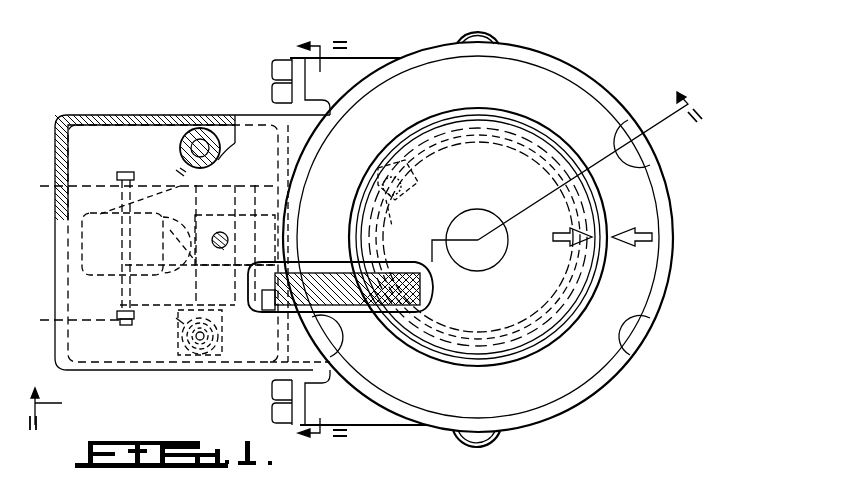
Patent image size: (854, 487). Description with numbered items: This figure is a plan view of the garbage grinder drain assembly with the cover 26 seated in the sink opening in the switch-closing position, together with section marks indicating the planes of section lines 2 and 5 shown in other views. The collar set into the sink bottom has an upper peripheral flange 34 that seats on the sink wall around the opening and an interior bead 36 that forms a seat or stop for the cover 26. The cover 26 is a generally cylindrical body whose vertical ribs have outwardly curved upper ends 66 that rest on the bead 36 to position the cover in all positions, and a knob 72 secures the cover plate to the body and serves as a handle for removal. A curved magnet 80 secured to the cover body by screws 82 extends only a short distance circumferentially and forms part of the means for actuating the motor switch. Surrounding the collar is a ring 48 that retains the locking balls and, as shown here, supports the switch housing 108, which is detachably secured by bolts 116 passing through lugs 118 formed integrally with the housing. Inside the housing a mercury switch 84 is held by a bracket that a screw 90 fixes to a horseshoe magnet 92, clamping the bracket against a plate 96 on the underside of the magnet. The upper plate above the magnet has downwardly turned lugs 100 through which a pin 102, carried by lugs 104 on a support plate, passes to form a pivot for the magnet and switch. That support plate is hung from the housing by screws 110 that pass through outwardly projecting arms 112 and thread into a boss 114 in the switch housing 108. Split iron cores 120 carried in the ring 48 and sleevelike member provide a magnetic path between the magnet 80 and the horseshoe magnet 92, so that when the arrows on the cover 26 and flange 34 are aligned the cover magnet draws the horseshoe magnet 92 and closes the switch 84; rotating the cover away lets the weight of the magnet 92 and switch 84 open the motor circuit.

The cover 26 is at (498, 146).
The upper peripheral flange 34 is at (664, 198).
The interior bead 36 is at (522, 360).
The ring 48 is at (372, 58).
The outwardly curved rib ends 66 is at (604, 120).
The knob 72 is at (492, 262).
The magnet 80 is at (400, 222).
The screws 82 is at (420, 190).
The mercury switch 84 is at (56, 254).
The screw 90 is at (208, 272).
The horseshoe magnet 92 is at (134, 186).
The plate 96 is at (260, 173).
The lugs 100 is at (144, 254).
The pin 102 is at (127, 326).
The lugs 104 is at (118, 322).
The switch housing 108 is at (186, 122).
The screws 110 is at (221, 151).
The arms 112 is at (178, 170).
The boss 114 is at (205, 148).
The bolts 116 is at (270, 68).
The lugs 118 is at (298, 95).
The iron cores 120 is at (333, 295).
The section line 2- 2 is at (361, 246).
The section line 5- 5 is at (311, 241).